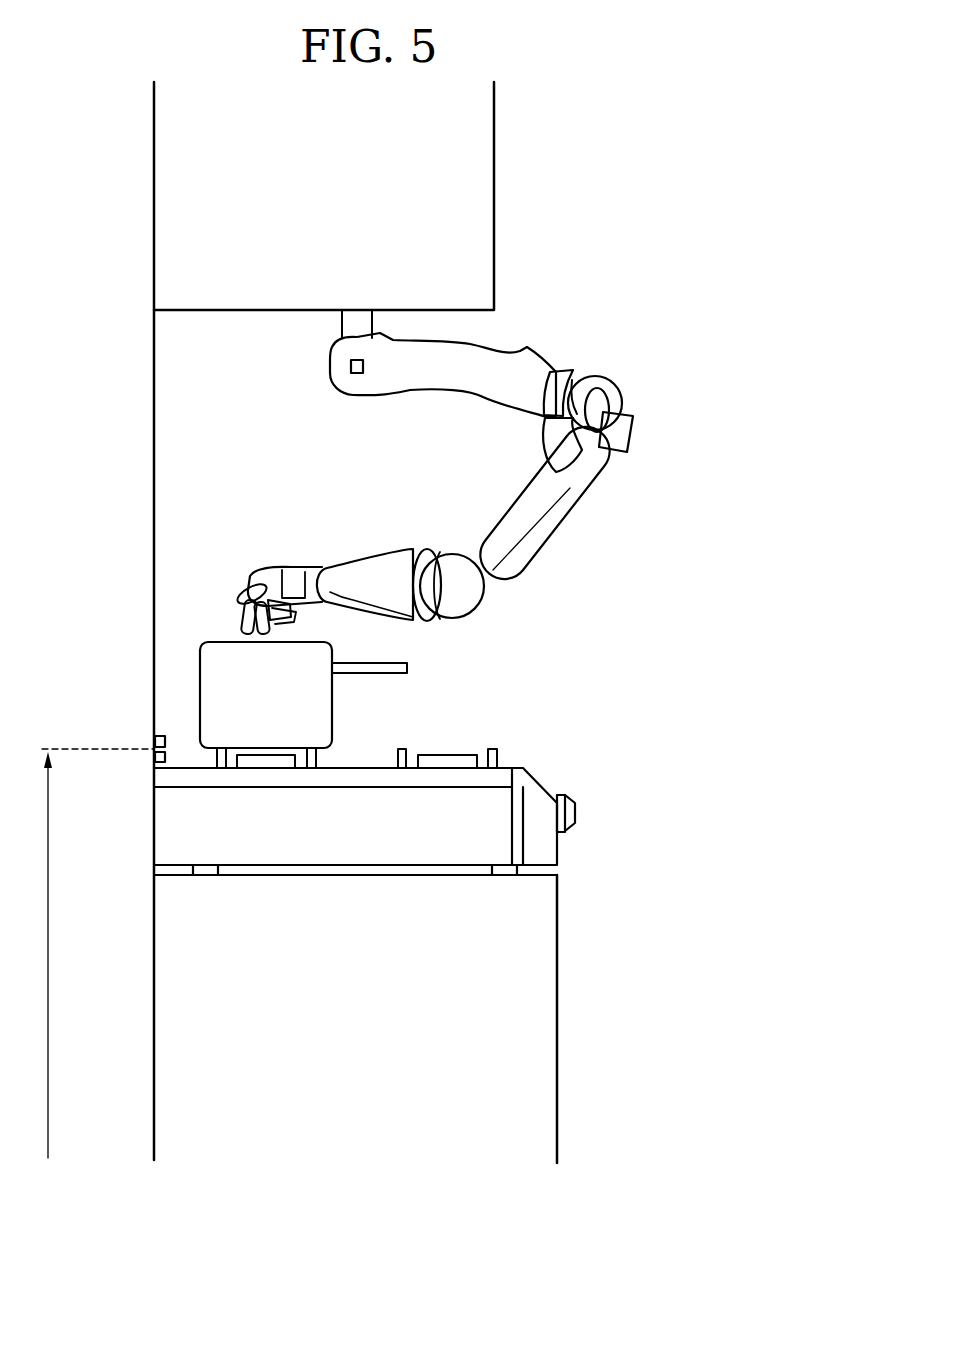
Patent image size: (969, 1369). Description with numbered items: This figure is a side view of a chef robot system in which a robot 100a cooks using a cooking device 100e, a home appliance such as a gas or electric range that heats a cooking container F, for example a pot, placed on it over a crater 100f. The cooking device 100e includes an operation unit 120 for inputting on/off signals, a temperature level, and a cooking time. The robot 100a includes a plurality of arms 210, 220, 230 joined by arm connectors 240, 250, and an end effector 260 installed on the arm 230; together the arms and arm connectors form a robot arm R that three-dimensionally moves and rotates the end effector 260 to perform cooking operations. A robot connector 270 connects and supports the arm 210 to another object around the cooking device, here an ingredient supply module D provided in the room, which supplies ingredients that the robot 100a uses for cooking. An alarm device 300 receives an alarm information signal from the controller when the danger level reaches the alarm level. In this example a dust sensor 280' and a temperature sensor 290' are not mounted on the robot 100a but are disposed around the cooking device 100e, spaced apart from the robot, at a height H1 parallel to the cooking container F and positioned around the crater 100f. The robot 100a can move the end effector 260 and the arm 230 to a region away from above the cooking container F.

The ingredient supply module D is at (527, 181).
The robot arm R is at (412, 427).
The robot 100a is at (412, 427).
The robot connector 270 is at (357, 321).
The alarm device 300 is at (350, 366).
The arm 210 is at (508, 366).
The arm connector 240 is at (603, 393).
The arm 220 is at (575, 511).
The arm connector 250 is at (438, 587).
The arm 230 is at (385, 568).
The end effector 260 is at (258, 581).
The cooking container F is at (216, 690).
The dust sensor 280' is at (119, 733).
The temperature sensor 290' is at (119, 768).
The crater 100f is at (263, 769).
The operation unit 120 is at (576, 811).
The cooking device 100e is at (387, 956).
The height H1 is at (87, 953).